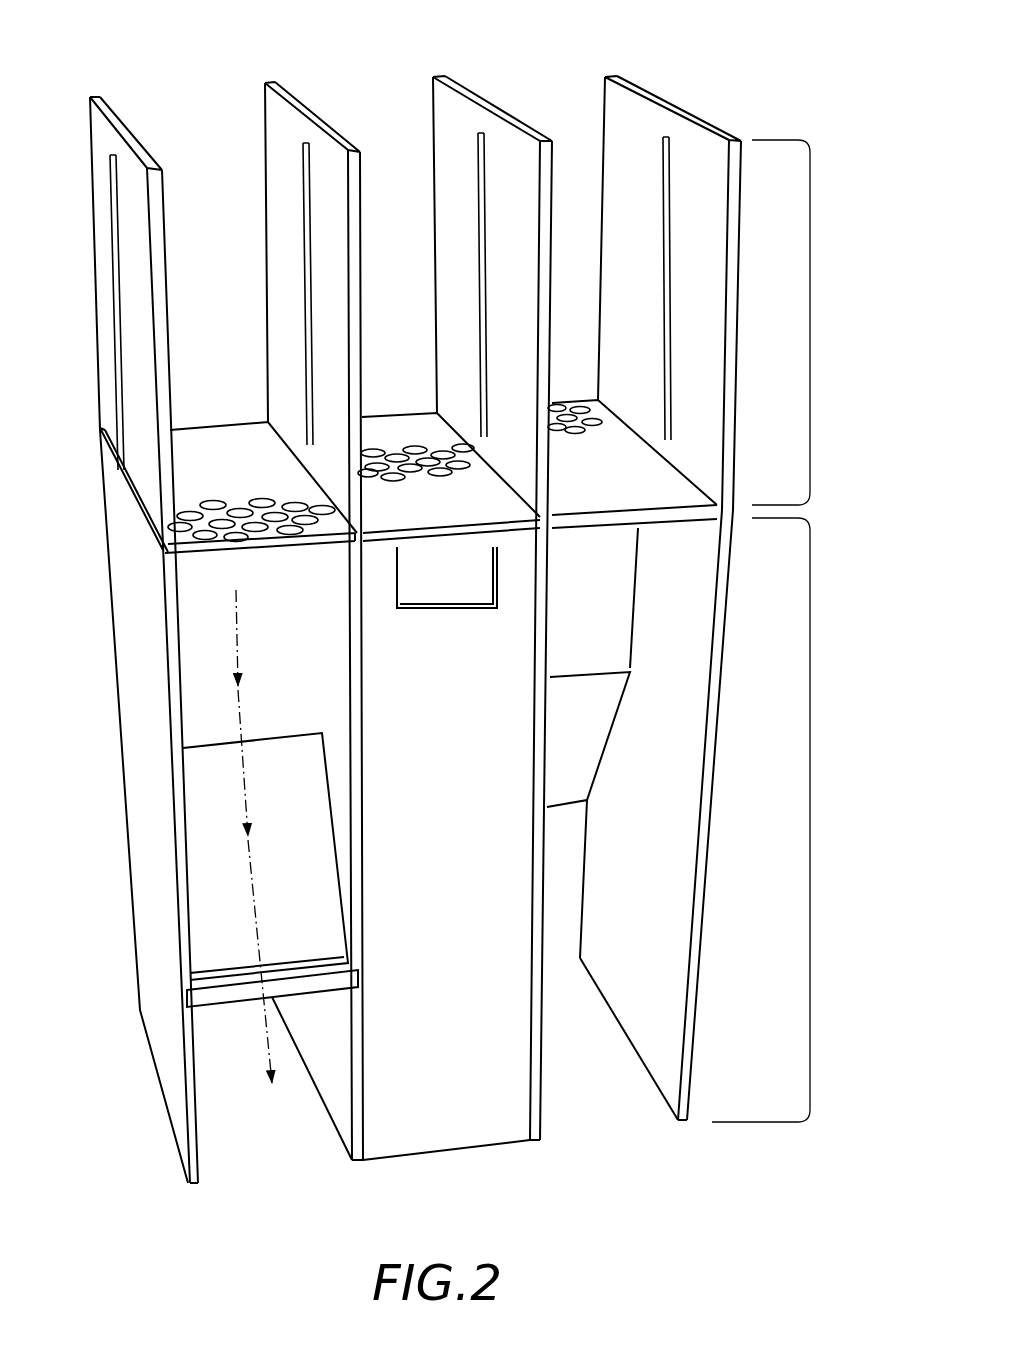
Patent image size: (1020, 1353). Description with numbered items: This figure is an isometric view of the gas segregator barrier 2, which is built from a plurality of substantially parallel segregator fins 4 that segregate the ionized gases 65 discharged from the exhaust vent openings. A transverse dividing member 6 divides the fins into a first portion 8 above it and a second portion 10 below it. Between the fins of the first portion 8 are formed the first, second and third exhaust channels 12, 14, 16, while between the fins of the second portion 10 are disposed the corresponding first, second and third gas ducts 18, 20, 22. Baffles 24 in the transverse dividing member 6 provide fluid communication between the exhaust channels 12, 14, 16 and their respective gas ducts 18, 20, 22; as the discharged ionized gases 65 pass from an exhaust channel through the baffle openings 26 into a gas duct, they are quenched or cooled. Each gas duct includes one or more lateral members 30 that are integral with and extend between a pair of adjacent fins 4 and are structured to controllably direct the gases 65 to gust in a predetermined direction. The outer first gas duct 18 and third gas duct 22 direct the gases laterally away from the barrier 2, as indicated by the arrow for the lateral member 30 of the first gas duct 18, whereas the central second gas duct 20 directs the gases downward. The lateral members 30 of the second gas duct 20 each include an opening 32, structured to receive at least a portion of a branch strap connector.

The gas segregator barrier 2 is at (582, 1187).
The segregator fins 4 is at (94, 118).
The transverse dividing member 6 is at (253, 548).
The first portion 8 is at (810, 322).
The second portion 10 is at (810, 813).
The first exhaust channel 12 is at (195, 145).
The second exhaust channel 14 is at (360, 95).
The third exhaust channel 16 is at (552, 100).
The first gas duct 18 is at (215, 785).
The second gas duct 20 is at (478, 975).
The third gas duct 22 is at (593, 728).
The baffles 24 is at (228, 490).
The baffle openings 26 is at (282, 503).
The lateral members 30 is at (225, 1008).
The opening 32 is at (412, 608).
The ionized gases 65 is at (262, 933).